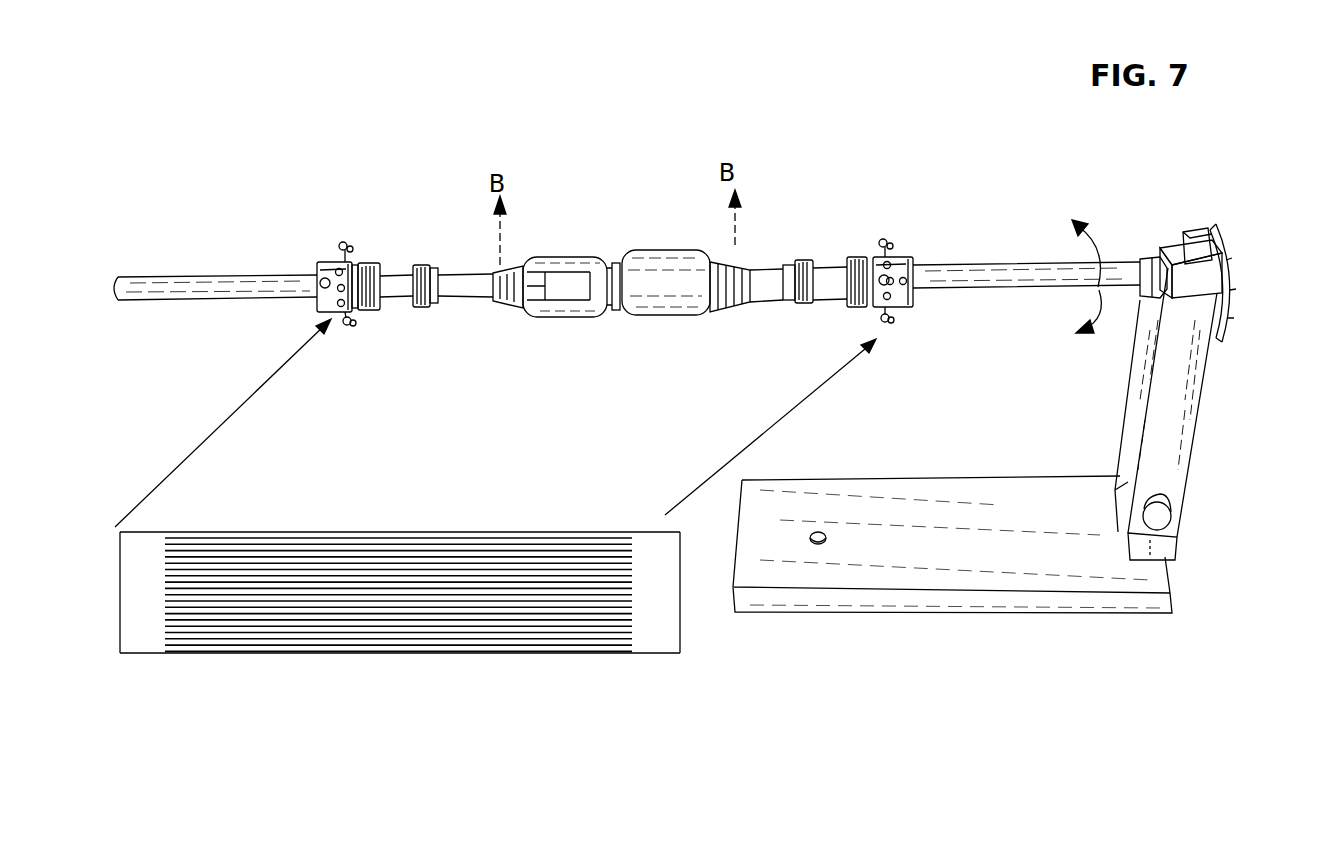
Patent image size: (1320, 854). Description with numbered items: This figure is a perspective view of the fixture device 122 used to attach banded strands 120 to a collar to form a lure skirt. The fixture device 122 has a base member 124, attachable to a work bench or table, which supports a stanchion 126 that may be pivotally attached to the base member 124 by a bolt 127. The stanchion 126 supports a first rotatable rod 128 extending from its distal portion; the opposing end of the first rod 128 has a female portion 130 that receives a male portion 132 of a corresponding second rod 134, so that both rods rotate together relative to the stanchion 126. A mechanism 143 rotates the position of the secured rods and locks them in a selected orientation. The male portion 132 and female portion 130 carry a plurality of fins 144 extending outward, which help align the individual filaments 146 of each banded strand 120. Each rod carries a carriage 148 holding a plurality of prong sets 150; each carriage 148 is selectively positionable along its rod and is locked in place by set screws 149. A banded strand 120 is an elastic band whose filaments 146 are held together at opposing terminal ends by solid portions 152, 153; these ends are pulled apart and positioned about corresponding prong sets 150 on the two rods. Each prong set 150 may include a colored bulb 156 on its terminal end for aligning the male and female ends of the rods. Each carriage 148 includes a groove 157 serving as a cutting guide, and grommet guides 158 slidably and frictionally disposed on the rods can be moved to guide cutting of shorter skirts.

The banded strand 120 is at (336, 665).
The fixture device 122 is at (1234, 388).
The base member 124 is at (973, 612).
The stanchion 126 is at (1130, 383).
The bolt 127 is at (1172, 519).
The first rotatable rod 128 is at (950, 287).
The female portion 130 is at (722, 312).
The male portion 132 is at (557, 328).
The second rod 134 is at (218, 275).
The mechanism 143 is at (1232, 220).
The fins 144 is at (533, 258).
The individual filaments 146 is at (375, 548).
The carriage 148 is at (330, 262).
The set screws 149 is at (320, 290).
The prong set 150 is at (344, 230).
The solid portion 152 is at (650, 590).
The solid portion 153 is at (125, 615).
The colored bulb 156 is at (346, 328).
The groove 157 is at (368, 262).
The grommet guide 158 is at (421, 304).